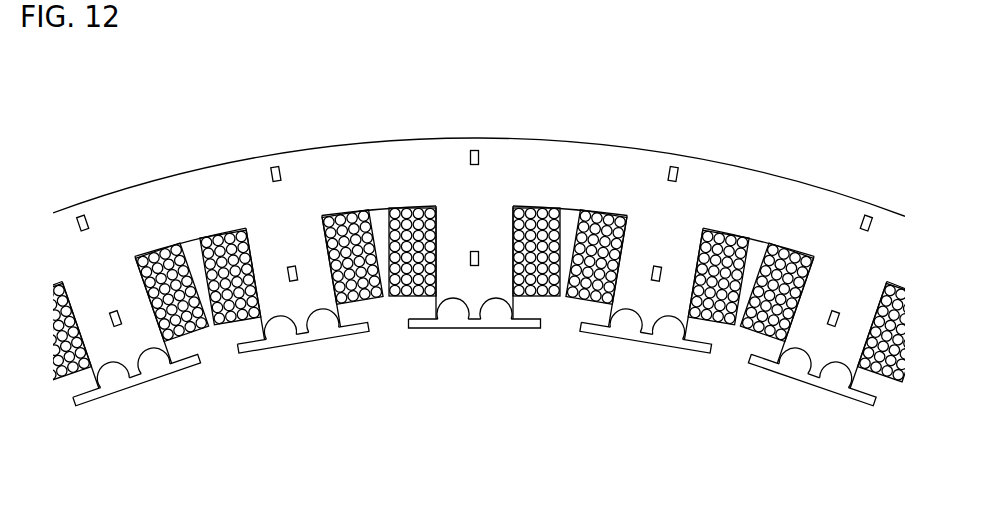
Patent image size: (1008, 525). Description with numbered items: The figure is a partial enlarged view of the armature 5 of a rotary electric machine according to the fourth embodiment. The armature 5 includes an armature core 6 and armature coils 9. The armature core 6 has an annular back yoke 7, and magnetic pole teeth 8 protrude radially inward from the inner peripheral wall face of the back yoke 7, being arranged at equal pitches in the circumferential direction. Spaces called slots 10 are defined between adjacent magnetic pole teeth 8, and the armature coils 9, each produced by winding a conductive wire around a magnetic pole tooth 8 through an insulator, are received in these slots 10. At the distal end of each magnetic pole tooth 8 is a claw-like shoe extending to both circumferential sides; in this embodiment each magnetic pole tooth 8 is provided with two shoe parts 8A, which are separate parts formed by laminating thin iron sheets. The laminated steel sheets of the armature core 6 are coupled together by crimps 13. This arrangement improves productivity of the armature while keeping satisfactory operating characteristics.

The armature 5 is at (843, 172).
The armature core 6 is at (737, 165).
The back yoke 7 is at (538, 163).
The magnetic pole tooth 8 is at (647, 223).
The shoe part 8A is at (620, 327).
The armature coil 9 is at (598, 217).
The slot 10 is at (563, 323).
The crimp 13 is at (462, 258).